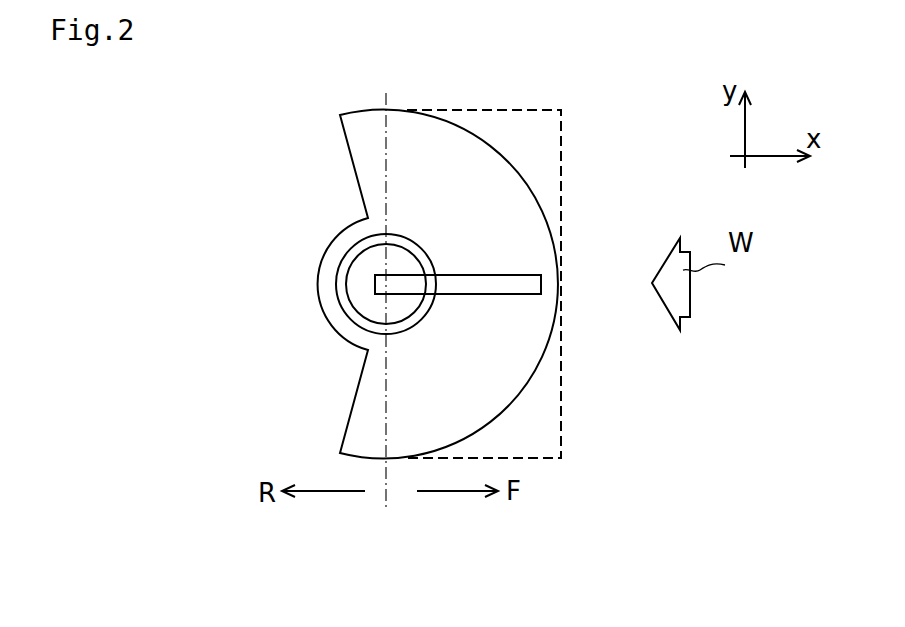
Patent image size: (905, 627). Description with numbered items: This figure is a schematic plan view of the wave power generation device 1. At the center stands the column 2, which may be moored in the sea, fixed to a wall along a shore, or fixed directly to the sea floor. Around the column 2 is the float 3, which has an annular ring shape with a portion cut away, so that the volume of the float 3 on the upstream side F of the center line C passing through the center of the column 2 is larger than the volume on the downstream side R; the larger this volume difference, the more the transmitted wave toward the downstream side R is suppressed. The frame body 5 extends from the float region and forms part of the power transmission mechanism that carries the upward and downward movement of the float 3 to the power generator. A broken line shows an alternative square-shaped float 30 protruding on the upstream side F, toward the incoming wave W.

The wave power generation device 1 is at (126, 141).
The column 2 is at (366, 270).
The float 3 is at (342, 326).
The frame body 5 is at (466, 283).
The square-shaped float 30 is at (561, 413).